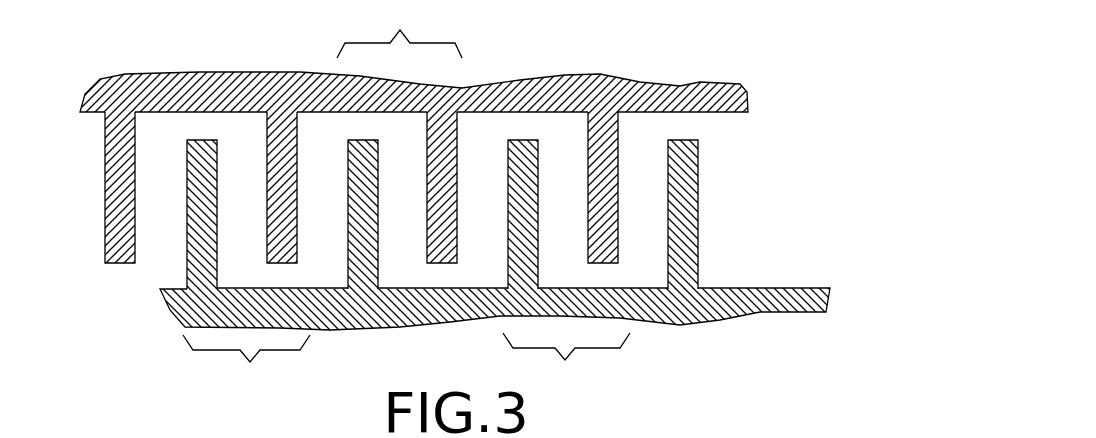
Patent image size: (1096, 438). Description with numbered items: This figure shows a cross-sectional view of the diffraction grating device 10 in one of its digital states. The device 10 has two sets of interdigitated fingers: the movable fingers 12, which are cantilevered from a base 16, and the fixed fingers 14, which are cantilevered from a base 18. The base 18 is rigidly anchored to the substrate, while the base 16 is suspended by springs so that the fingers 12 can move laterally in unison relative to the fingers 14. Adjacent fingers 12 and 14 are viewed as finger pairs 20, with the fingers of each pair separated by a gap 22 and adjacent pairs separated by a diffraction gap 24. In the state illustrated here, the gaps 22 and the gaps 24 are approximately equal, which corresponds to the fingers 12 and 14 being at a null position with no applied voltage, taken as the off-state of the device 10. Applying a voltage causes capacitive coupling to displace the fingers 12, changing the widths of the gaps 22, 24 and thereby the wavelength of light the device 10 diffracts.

The diffraction grating device 10 is at (743, 340).
The movable fingers 12 is at (510, 263).
The fixed fingers 14 is at (588, 147).
The base of the movable fingers 16 is at (173, 310).
The base of the fixed fingers 18 is at (681, 90).
The finger pairs 20 is at (406, 201).
The gap 22 is at (581, 190).
The diffraction gap 24 is at (659, 190).